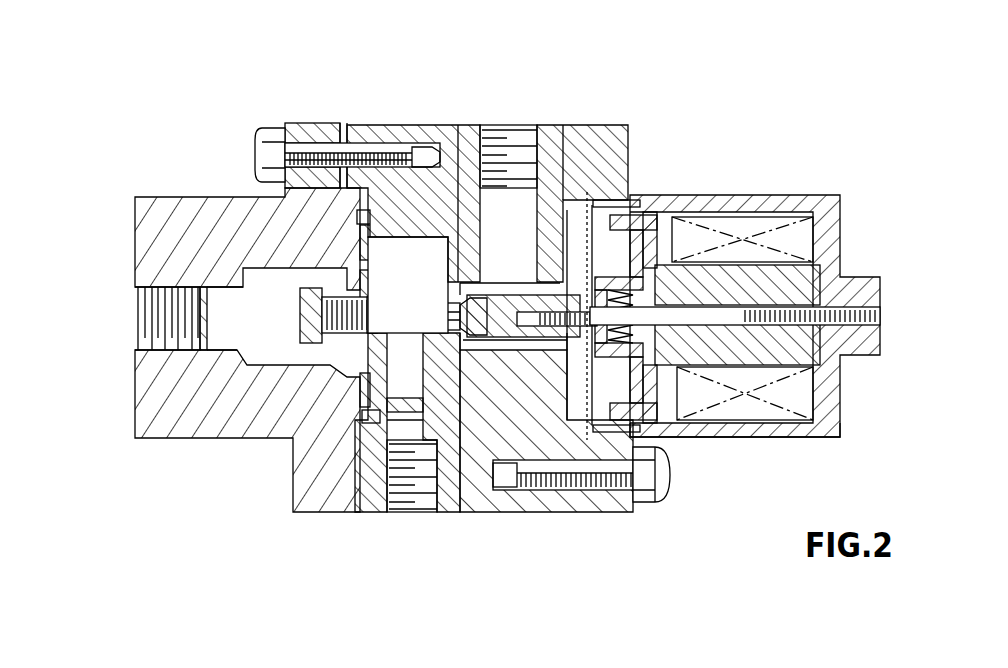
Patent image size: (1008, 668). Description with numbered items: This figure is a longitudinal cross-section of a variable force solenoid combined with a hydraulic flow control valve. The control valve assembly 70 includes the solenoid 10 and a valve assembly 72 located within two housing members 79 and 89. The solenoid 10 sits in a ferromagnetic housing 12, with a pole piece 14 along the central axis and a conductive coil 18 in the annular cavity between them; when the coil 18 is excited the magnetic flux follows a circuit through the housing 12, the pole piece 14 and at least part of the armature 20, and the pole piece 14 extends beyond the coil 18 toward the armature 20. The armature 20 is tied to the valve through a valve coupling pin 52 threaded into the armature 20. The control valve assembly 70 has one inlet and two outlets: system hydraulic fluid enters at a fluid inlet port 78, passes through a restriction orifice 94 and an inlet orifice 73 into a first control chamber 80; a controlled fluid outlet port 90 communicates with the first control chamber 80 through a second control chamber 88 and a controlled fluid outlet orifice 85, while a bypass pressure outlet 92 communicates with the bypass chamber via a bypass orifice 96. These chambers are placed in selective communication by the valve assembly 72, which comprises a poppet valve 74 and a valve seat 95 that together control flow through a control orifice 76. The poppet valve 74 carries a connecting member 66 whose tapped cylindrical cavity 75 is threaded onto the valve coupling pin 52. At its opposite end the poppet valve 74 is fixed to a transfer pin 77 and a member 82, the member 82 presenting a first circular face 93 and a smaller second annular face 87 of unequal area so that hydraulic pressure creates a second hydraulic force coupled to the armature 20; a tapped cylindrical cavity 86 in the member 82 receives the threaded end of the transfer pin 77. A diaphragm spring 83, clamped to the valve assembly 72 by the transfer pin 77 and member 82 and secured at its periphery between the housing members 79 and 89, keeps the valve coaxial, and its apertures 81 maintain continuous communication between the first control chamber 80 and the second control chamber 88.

The solenoid 10 is at (488, 313).
The housing 12 is at (745, 192).
The pole piece 14 is at (805, 283).
The conductive coil 18 is at (802, 235).
The armature 20 is at (677, 437).
The valve coupling pin 52 is at (551, 333).
The connecting member 66 is at (498, 333).
The control valve assembly 70 is at (315, 100).
The valve assembly 72 is at (350, 262).
The inlet orifice 73 is at (238, 355).
The poppet valve 74 is at (462, 260).
The tapped cylindrical cavity 75 is at (567, 512).
The control orifice 76 is at (468, 300).
The transfer pin 77 is at (450, 513).
The fluid inlet port 78 is at (133, 320).
The housing member 79 is at (277, 290).
The first control chamber 80 is at (275, 348).
The apertures 81 is at (350, 385).
The member 82 is at (318, 340).
The diaphragm spring 83 is at (230, 190).
The controlled fluid outlet orifice 85 is at (372, 425).
The tapped cylindrical cavity 86 is at (345, 365).
The second annular face 87 is at (300, 288).
The second control chamber 88 is at (400, 257).
The housing member 89 is at (370, 147).
The controlled fluid outlet port 90 is at (413, 513).
The bypass pressure outlet 92 is at (523, 283).
The first circular face 93 is at (347, 270).
The restriction orifice 94 is at (137, 397).
The valve seat 95 is at (457, 517).
The bypass orifice 96 is at (595, 205).